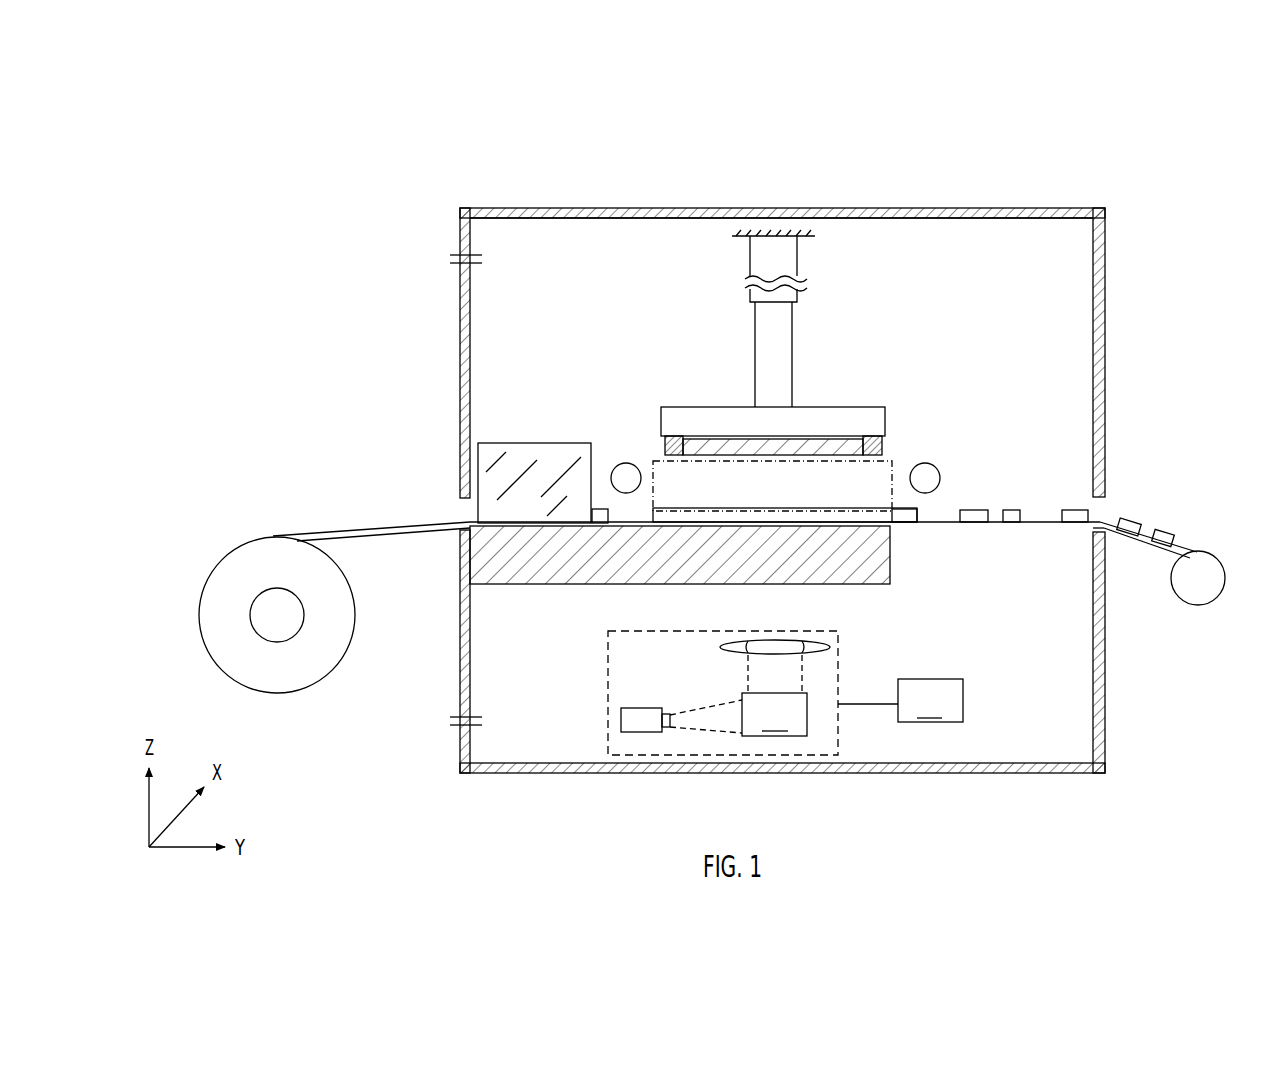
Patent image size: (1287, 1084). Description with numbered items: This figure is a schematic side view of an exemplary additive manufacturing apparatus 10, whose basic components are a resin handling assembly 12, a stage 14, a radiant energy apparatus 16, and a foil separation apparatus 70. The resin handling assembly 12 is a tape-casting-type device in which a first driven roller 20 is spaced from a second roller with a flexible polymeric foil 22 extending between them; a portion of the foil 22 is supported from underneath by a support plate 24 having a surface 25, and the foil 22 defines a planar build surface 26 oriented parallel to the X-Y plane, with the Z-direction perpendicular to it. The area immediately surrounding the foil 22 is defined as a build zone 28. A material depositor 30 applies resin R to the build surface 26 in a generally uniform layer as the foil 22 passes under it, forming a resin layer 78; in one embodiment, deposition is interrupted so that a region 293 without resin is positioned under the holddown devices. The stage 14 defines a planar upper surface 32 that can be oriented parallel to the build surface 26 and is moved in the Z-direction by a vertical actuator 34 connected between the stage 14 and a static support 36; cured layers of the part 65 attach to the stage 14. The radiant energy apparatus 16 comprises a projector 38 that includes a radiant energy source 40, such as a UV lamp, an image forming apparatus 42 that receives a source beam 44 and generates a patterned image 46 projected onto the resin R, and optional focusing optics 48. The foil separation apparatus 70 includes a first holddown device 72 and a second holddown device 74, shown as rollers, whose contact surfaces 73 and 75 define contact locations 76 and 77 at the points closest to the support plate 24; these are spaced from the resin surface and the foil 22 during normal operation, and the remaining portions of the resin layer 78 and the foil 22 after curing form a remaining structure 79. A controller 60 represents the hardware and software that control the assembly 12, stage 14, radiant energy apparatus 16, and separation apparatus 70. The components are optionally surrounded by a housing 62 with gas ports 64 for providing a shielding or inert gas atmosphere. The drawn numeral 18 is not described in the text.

The apparatus 10 is at (910, 196).
The resin handling assembly 12 is at (1053, 450).
The stage 14 is at (815, 410).
The radiant energy apparatus 16 is at (860, 660).
The inspection region 18 is at (777, 510).
The first driven roller 20 is at (252, 632).
The foil 22 is at (382, 532).
The support plate 24 is at (816, 585).
The surface 25 is at (765, 523).
The build surface 26 is at (592, 523).
The build zone 28 is at (925, 494).
The region 293 is at (940, 517).
The material depositor 30 is at (525, 443).
The planar upper surface 32 is at (886, 444).
The vertical actuator 34 is at (778, 317).
The static support 36 is at (800, 238).
The projector 38 is at (838, 733).
The radiant energy source 40 is at (620, 722).
The image forming apparatus 42 is at (774, 714).
The source beam 44 is at (687, 712).
The patterned image 46 is at (747, 672).
The focusing optics 48 is at (722, 650).
The controller 60 is at (930, 700).
The housing 62 is at (498, 218).
The gas ports 64 is at (475, 268).
The part 65 is at (698, 440).
The foil separation apparatus 70 is at (1020, 390).
The first holddown device 72 is at (475, 715).
The contact surface 73 is at (612, 473).
The second holddown device 74 is at (930, 477).
The contact surface 75 is at (920, 466).
The contact location 76 is at (591, 498).
The contact location 77 is at (928, 494).
The resin layer 78 is at (696, 510).
The remaining structure 79 is at (903, 525).
The resin R is at (651, 512).